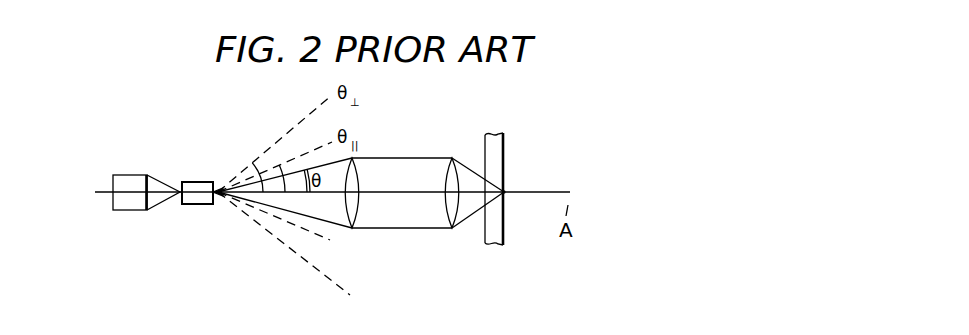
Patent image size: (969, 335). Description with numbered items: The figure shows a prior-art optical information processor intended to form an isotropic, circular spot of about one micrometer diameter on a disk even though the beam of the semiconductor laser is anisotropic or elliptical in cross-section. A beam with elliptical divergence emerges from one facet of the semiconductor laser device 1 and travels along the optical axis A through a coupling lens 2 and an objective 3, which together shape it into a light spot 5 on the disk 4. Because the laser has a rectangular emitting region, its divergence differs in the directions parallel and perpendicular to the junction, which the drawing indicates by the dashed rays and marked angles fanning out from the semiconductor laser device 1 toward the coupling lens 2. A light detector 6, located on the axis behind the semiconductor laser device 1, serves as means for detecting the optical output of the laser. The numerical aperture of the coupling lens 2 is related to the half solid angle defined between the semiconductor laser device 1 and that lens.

The light detector 6 is at (131, 183).
The semiconductor laser device 1 is at (200, 184).
The coupling lens 2 is at (357, 220).
The objective 3 is at (453, 220).
The disk 4 is at (490, 155).
The light spot 5 is at (505, 193).